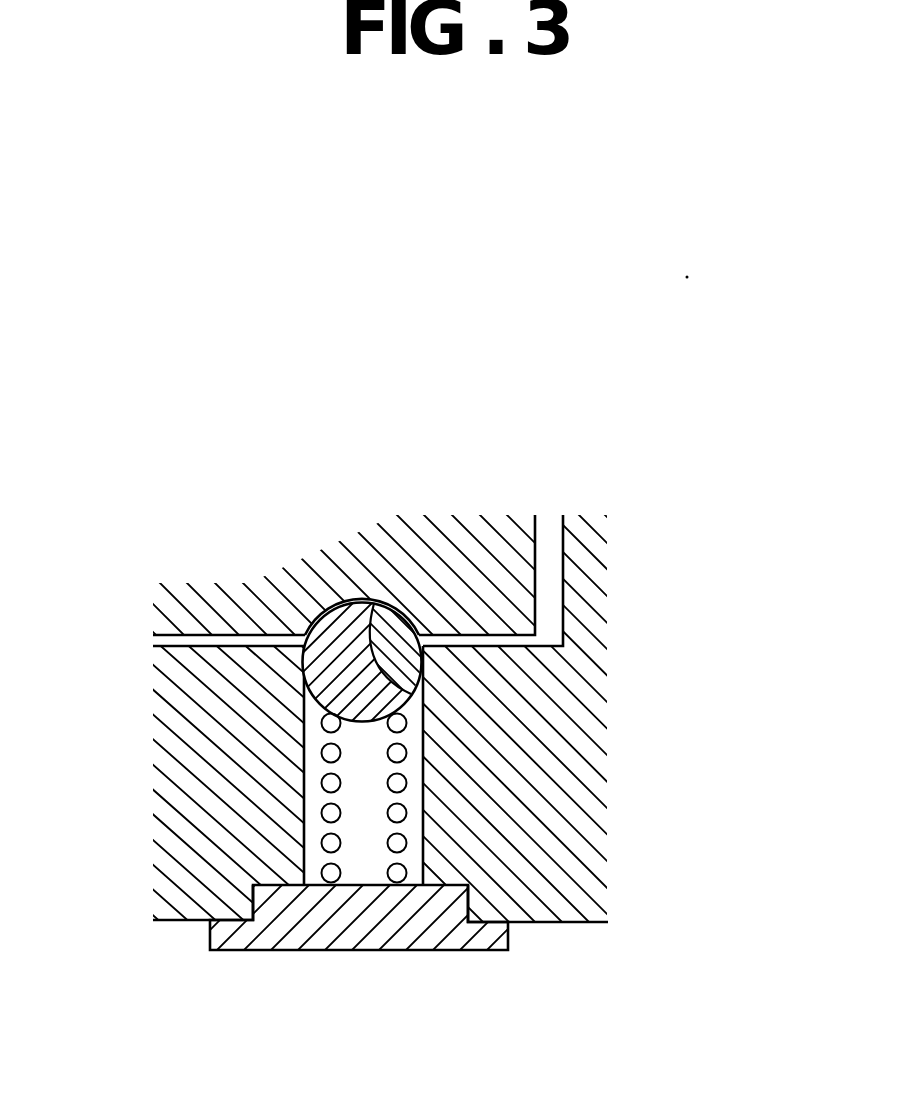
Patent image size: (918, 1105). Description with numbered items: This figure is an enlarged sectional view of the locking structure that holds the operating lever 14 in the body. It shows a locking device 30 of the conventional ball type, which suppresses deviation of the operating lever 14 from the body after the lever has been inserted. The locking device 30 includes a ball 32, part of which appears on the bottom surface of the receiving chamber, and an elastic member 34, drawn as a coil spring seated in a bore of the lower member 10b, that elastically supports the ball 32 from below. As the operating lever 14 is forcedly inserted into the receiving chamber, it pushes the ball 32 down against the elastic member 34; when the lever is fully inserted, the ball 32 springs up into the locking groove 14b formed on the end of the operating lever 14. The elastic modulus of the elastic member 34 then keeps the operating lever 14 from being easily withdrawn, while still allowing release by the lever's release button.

The operating lever 14 is at (490, 553).
The locking groove 14b is at (422, 699).
The ball 32 is at (330, 665).
The locking device 30 is at (312, 722).
The elastic member 34 is at (397, 783).
The lower member 10b is at (577, 888).